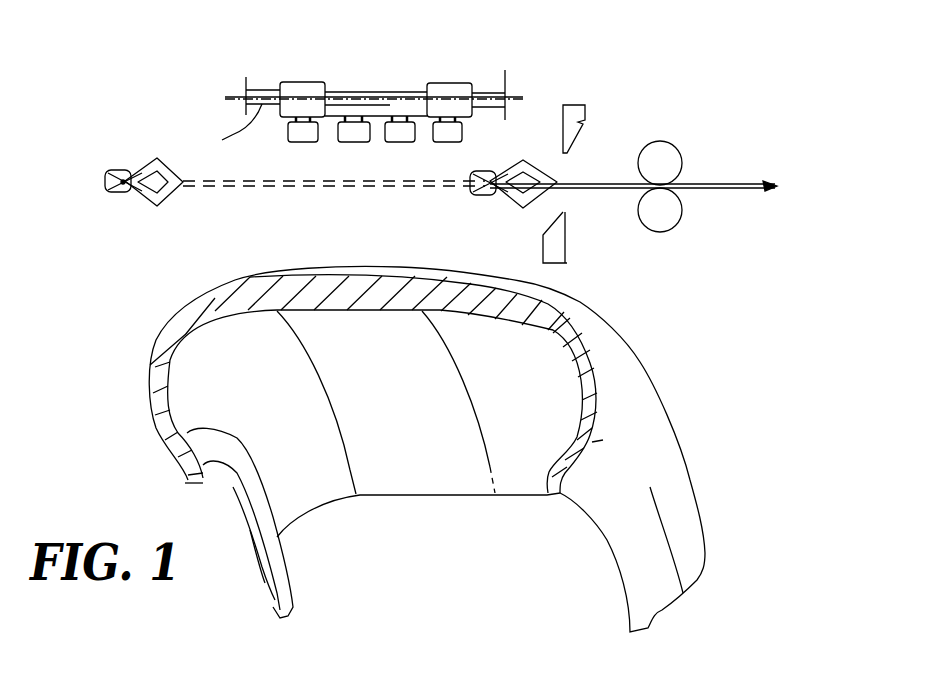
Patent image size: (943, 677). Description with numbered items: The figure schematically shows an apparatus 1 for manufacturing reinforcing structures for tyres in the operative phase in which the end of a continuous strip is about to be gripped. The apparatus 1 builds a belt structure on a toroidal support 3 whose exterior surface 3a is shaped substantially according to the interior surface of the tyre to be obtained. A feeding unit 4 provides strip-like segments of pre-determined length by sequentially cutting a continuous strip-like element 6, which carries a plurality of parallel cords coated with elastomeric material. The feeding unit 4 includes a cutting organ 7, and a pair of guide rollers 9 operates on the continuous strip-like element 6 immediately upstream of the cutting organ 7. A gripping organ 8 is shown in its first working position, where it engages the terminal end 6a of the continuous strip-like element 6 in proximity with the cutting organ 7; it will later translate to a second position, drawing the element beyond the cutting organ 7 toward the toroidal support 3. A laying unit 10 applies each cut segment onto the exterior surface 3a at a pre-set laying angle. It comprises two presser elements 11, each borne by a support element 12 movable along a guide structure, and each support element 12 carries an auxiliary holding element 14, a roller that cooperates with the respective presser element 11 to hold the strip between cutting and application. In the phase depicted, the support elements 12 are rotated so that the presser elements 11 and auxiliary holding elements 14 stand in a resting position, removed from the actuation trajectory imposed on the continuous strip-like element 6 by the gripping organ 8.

The apparatus for manufacturing reinforcing structures for tyres 1 is at (730, 78).
The toroidal support 3 is at (690, 472).
The exterior surface 3a is at (447, 270).
The feeding unit 4 is at (602, 218).
The continuous strip-like element 6 is at (750, 193).
The terminal end 6a is at (567, 183).
The cutting organ 7 is at (585, 120).
The gripping organ 8 is at (141, 157).
The pair of guide rollers 9 is at (670, 210).
The laying unit 10 is at (219, 81).
The presser element 11 is at (352, 142).
The support element 12 is at (303, 92).
The auxiliary holding element 14 is at (457, 130).